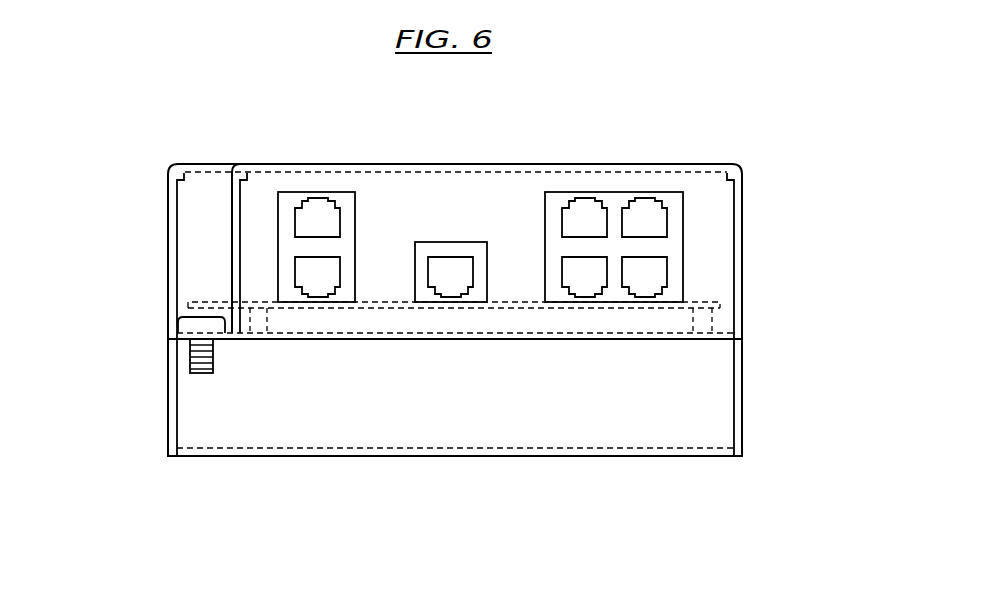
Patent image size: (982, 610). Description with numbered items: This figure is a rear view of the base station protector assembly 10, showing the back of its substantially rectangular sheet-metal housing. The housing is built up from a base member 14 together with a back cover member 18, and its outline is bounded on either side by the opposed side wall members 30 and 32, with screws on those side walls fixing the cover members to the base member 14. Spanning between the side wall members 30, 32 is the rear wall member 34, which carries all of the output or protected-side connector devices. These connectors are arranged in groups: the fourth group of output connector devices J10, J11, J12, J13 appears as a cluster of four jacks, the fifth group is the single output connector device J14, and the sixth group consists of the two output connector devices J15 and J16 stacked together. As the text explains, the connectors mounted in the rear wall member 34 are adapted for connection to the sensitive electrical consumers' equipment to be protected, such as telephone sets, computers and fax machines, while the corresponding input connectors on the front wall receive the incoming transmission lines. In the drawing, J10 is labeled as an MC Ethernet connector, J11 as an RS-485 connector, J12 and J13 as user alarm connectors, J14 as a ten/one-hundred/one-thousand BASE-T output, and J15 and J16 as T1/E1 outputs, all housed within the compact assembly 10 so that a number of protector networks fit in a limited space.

The base station protector assembly 10 is at (126, 150).
The base member 14 is at (232, 461).
The back cover member 18 is at (506, 156).
The side wall member 30 is at (742, 307).
The side wall member 32 is at (168, 308).
The rear wall member 34 is at (424, 210).
The output connector device J16 is at (316, 199).
The output connector device J15 is at (318, 298).
The output connector device J14 is at (452, 256).
The output connector device J13 is at (582, 198).
The output connector device J12 is at (585, 298).
The output connector device J11 is at (648, 199).
The output connector device J10 is at (645, 298).